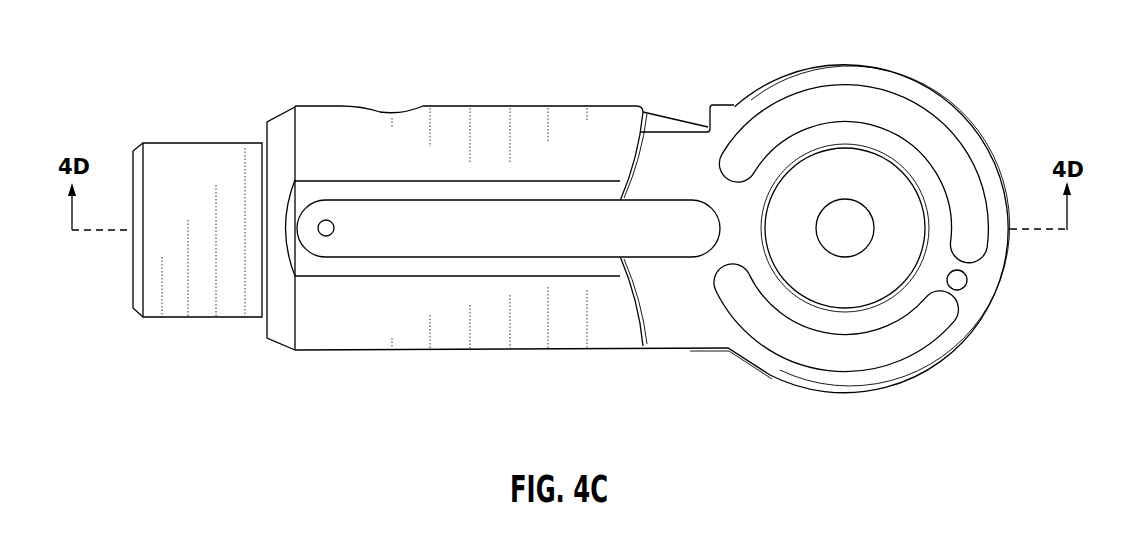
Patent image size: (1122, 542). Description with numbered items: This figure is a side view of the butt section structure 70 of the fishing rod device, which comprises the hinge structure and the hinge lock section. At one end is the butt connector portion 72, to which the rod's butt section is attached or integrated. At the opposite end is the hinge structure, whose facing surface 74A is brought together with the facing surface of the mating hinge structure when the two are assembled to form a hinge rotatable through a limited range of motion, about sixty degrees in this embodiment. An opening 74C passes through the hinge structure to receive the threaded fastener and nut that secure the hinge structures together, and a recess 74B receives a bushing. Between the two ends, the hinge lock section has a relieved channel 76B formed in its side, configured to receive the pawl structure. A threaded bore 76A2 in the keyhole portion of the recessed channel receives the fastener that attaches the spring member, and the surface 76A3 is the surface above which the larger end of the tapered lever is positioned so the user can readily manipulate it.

The butt section structure 70 is at (491, 80).
The butt connector portion 72 is at (203, 143).
The facing surface 74A is at (742, 243).
The recess 74B is at (820, 283).
The opening 74C is at (845, 240).
The threaded bore 76A2 is at (327, 220).
The surface 76A3 is at (576, 105).
The relieved channel 76B is at (530, 243).